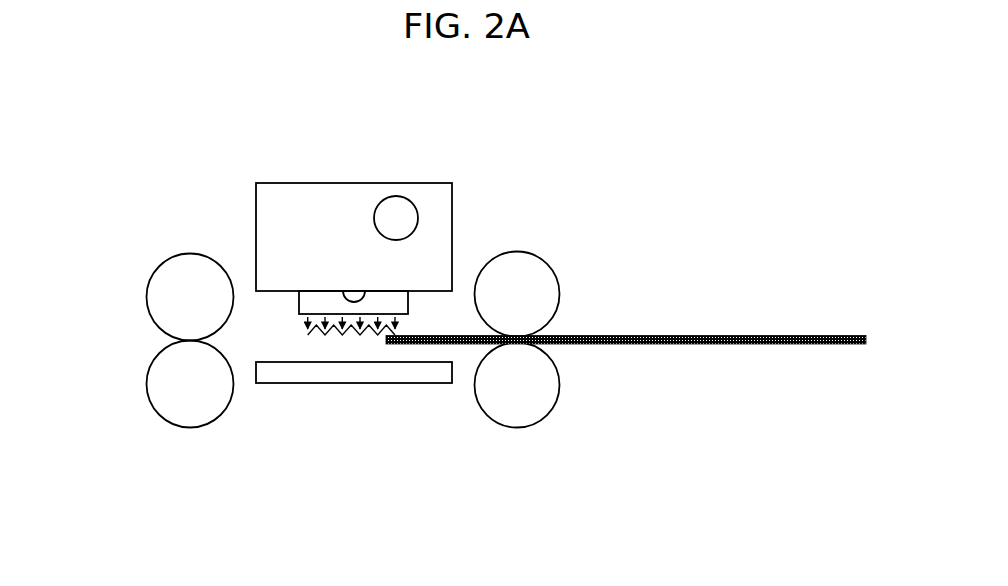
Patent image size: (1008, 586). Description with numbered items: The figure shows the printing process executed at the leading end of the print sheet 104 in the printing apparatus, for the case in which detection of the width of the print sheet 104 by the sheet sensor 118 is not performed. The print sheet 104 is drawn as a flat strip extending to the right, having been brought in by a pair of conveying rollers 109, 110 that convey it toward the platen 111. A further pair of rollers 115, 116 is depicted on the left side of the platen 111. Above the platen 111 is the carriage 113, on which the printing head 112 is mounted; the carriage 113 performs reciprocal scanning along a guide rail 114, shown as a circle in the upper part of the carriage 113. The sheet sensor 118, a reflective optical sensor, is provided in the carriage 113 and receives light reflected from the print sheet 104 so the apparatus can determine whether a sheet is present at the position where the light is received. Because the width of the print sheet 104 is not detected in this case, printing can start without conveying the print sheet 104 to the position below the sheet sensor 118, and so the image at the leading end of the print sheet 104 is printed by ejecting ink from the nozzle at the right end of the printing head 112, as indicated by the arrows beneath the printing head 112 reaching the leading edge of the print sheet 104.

The print sheet 104 is at (692, 335).
The conveying roller 109 is at (540, 383).
The conveying roller 110 is at (543, 278).
The platen 111 is at (318, 385).
The printing head 112 is at (315, 303).
The carriage 113 is at (317, 192).
The guide rail 114 is at (400, 197).
The conveyance roller 115 is at (199, 415).
The conveyance roller 116 is at (160, 297).
The sheet sensor 118 is at (357, 289).